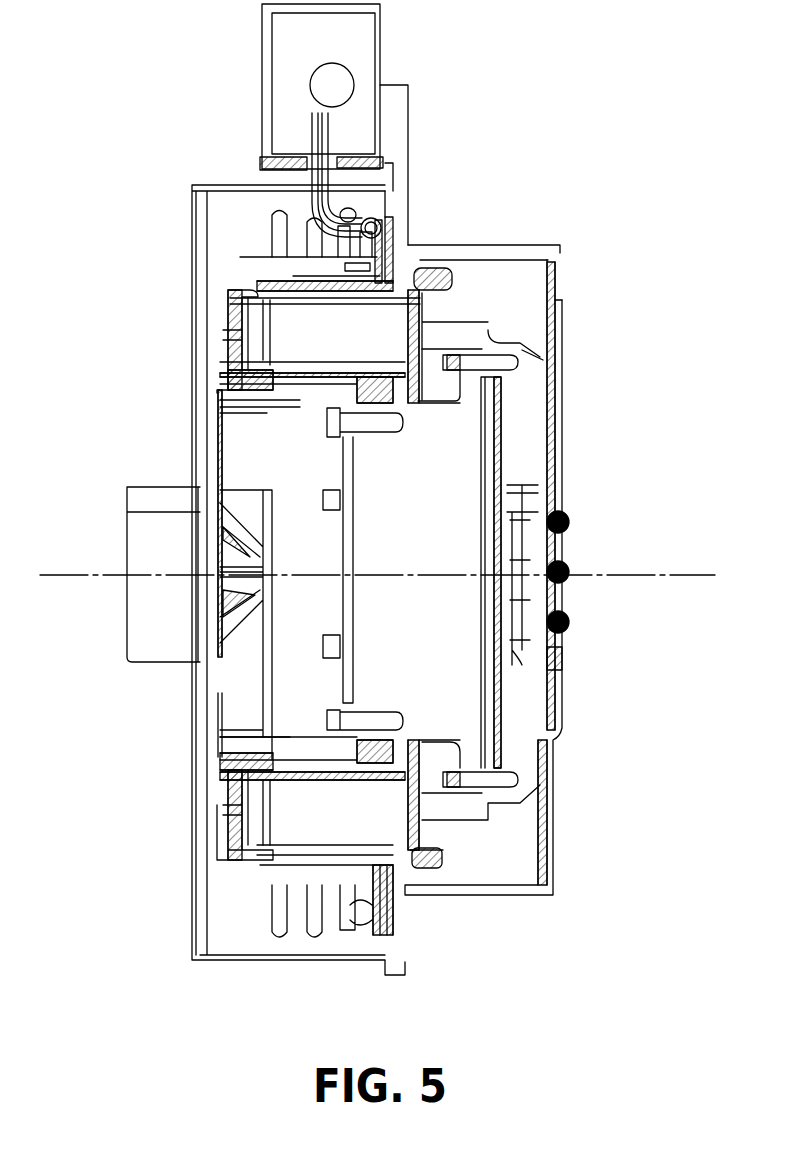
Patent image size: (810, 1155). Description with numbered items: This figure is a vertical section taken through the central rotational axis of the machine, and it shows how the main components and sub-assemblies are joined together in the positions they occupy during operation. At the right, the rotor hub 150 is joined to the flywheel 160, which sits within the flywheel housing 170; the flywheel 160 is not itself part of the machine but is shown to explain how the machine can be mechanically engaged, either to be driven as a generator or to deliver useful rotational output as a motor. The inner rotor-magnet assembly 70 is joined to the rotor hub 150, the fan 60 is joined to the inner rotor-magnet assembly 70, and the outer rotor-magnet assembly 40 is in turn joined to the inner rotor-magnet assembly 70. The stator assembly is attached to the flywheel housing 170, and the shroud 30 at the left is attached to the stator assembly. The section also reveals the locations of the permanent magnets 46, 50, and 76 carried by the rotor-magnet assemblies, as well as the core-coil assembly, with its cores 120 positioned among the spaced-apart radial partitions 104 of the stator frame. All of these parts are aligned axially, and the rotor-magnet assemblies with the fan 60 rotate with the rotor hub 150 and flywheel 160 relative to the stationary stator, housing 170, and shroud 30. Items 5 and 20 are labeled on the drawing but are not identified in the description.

The central axis 5 is at (448, 575).
The motor 20 is at (380, 52).
The shroud 30 is at (208, 186).
The outer rotor-magnet assembly 40 is at (245, 270).
The permanent magnet 46 is at (292, 272).
The permanent magnet 50 is at (228, 317).
The fan 60 is at (273, 617).
The inner rotor-magnet assembly 70 is at (317, 395).
The permanent magnet 76 is at (335, 370).
The radial partition 104 is at (413, 747).
The core 120 is at (300, 820).
The rotor hub 150 is at (448, 435).
The flywheel 160 is at (523, 397).
The flywheel housing 170 is at (540, 244).